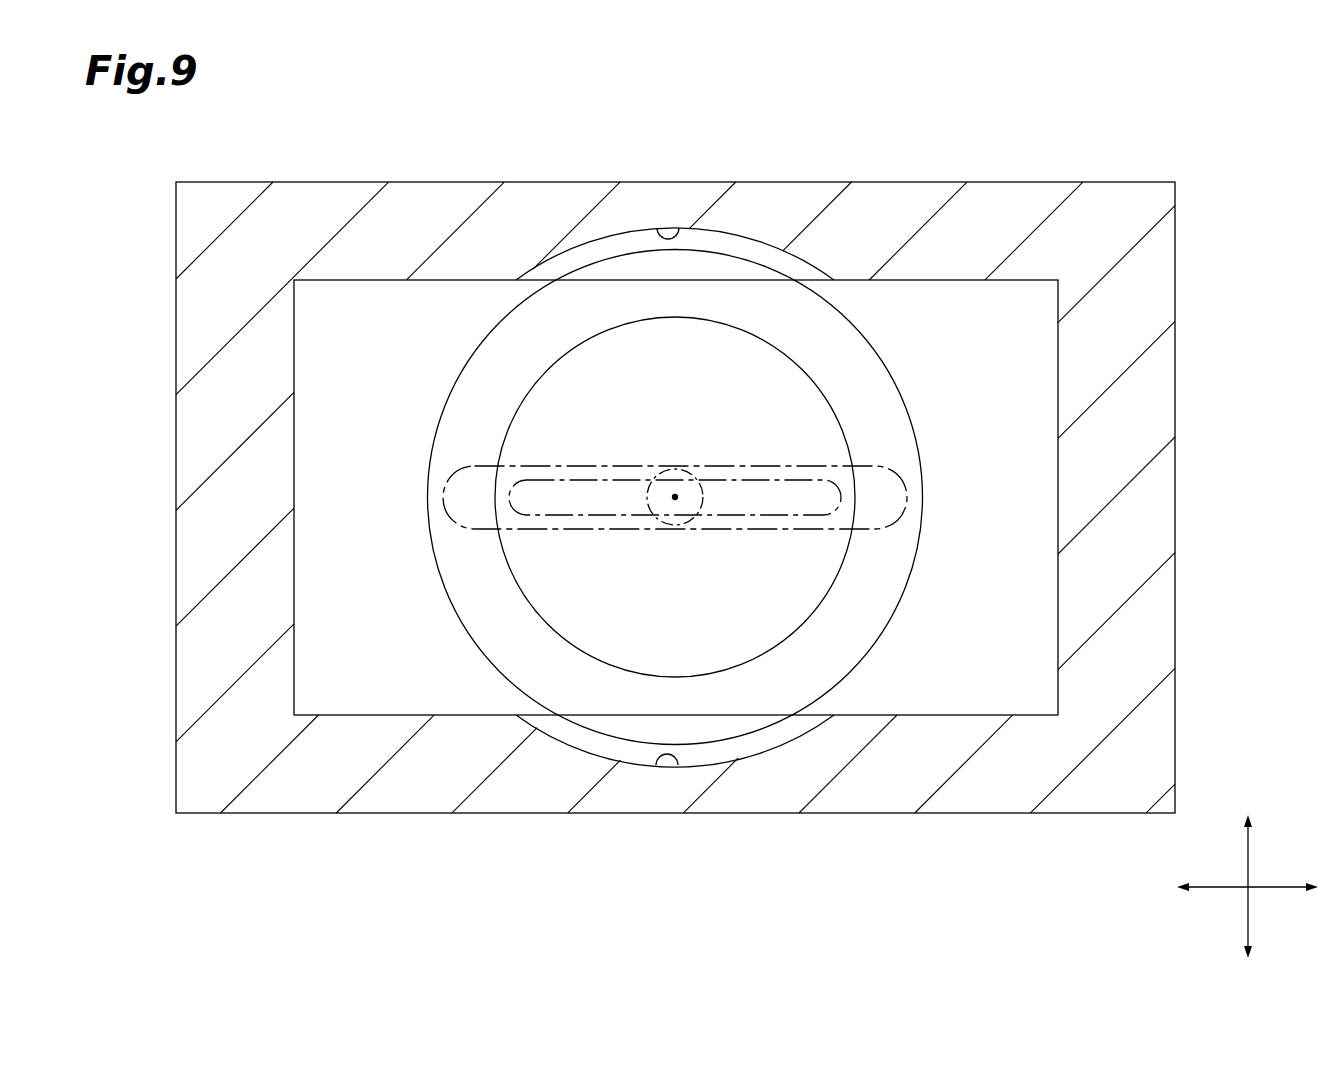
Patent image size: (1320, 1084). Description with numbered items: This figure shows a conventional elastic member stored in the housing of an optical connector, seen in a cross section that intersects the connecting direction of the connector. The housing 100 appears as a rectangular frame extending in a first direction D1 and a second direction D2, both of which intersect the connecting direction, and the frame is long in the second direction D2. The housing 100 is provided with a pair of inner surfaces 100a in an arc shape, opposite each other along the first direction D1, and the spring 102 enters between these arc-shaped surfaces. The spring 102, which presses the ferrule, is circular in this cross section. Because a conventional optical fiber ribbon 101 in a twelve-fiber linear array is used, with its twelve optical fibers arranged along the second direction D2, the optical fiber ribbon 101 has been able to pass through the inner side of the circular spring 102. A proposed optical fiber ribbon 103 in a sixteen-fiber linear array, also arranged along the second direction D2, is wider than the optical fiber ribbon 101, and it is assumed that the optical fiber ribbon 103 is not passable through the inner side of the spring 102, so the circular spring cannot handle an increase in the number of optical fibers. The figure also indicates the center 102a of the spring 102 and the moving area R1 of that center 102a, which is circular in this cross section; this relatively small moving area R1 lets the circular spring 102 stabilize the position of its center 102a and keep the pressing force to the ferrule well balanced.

The housing 100 is at (1040, 178).
The inner surfaces 100a is at (673, 227).
The optical fiber ribbon 101 is at (550, 516).
The spring 102 is at (916, 416).
The center 102a is at (675, 497).
The optical fiber ribbon 103 is at (607, 531).
The moving area R1 is at (690, 470).
The first direction D1 is at (1249, 857).
The second direction D2 is at (1215, 890).